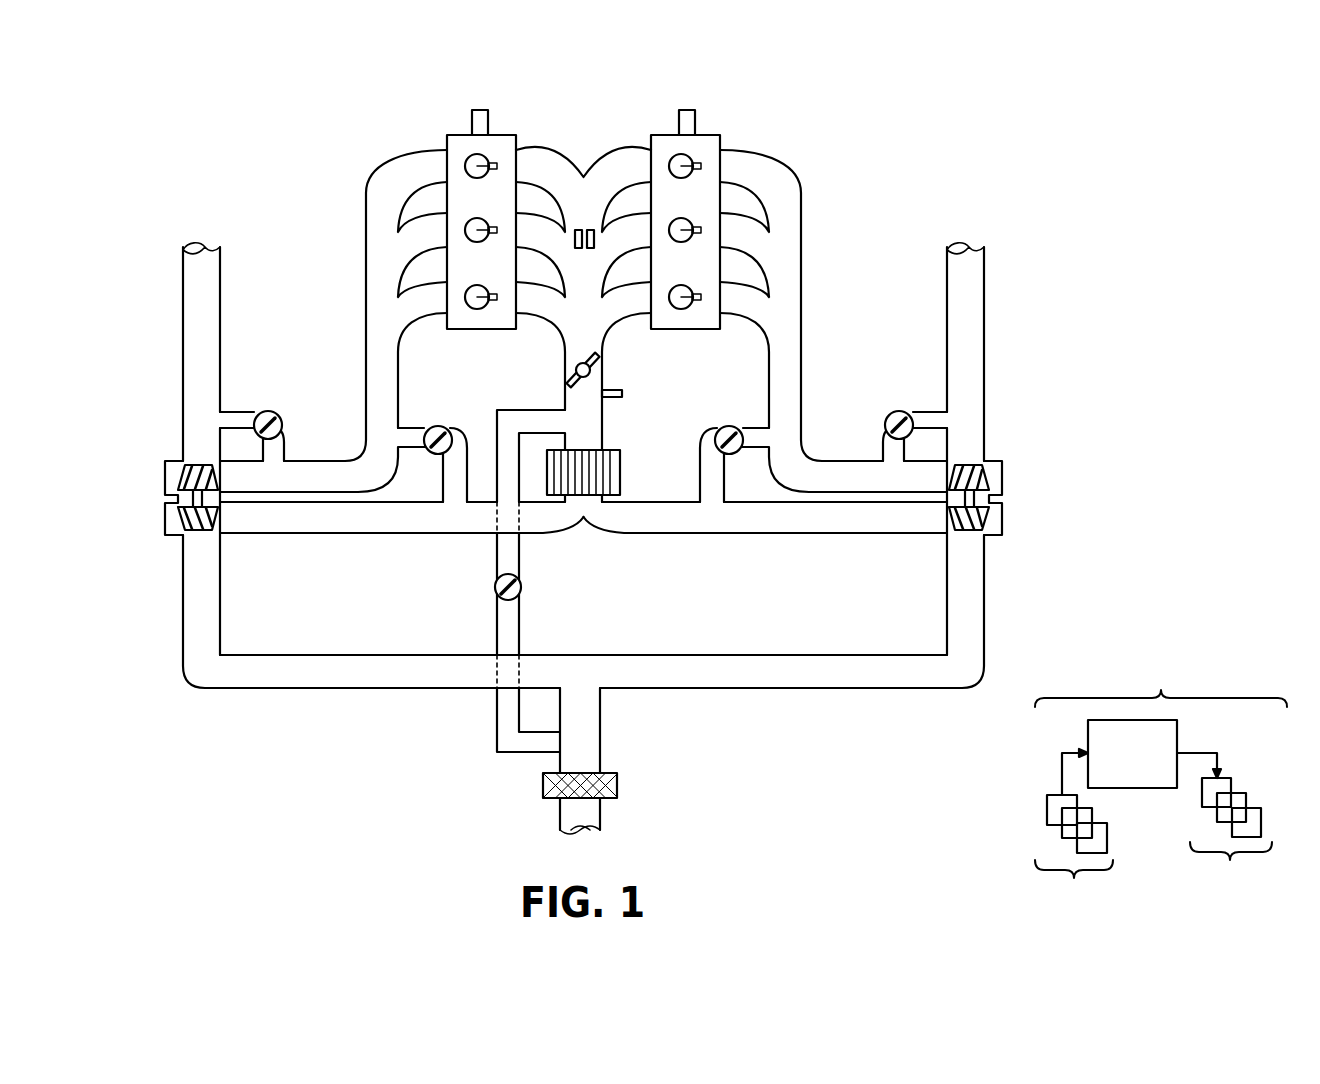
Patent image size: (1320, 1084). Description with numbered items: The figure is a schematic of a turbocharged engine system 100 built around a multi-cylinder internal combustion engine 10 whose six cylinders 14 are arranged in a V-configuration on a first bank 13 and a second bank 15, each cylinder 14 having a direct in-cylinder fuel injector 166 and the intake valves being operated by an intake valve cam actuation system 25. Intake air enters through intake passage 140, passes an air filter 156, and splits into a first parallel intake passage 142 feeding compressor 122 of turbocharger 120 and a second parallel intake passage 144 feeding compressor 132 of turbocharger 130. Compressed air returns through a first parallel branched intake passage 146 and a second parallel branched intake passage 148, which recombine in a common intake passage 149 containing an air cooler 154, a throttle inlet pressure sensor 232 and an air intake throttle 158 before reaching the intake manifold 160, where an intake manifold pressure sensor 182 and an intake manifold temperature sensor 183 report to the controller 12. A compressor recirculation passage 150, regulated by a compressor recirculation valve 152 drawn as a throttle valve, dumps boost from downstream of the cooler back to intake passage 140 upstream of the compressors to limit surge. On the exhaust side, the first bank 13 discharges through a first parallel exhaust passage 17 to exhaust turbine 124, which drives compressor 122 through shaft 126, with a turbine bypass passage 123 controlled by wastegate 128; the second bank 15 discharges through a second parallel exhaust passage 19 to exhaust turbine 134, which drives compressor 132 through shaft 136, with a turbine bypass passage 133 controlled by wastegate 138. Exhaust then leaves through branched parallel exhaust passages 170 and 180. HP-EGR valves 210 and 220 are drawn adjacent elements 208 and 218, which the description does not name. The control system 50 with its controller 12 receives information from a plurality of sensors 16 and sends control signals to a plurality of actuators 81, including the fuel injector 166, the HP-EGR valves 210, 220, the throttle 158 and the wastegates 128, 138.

The internal combustion engine 10 is at (948, 135).
The turbocharged engine system 100 is at (1204, 135).
The intake manifold 160 is at (579, 152).
The second parallel exhaust passage 19 is at (365, 384).
The first parallel exhaust passage 17 is at (802, 391).
The second bank 15 is at (458, 134).
The first bank 13 is at (709, 134).
The intake valve cam actuation system 25 is at (482, 110).
The cylinder 14 is at (683, 214).
The fuel injector 166 is at (699, 227).
The intake manifold pressure sensor 182 is at (577, 249).
The intake manifold temperature sensor 183 is at (591, 249).
The common intake passage 149 is at (604, 423).
The air intake throttle 158 is at (583, 362).
The throttle inlet pressure sensor 232 is at (619, 390).
The air cooler 154 is at (620, 462).
The first exhaust passage 218 is at (404, 427).
The HP-EGR valve 220 is at (440, 426).
The second exhaust passage 208 is at (704, 458).
The HP-EGR valve 210 is at (729, 426).
The compressor recirculation passage 150 is at (497, 563).
The compressor recirculation valve 152 is at (522, 582).
The second parallel branched intake passage 148 is at (321, 534).
The first parallel branched intake passage 146 is at (757, 534).
The second parallel intake passage 144 is at (349, 655).
The first parallel intake passage 142 is at (762, 655).
The branched parallel exhaust passage 180 is at (223, 291).
The turbine bypass passage 133 is at (237, 411).
The wastegate 138 is at (280, 419).
The branched parallel exhaust passage 170 is at (946, 292).
The turbine bypass passage 123 is at (935, 412).
The wastegate 128 is at (887, 418).
The turbocharger 130 is at (164, 474).
The exhaust turbine 134 is at (183, 471).
The shaft 136 is at (183, 508).
The compressor 132 is at (204, 533).
The turbocharger 120 is at (995, 473).
The exhaust turbine 124 is at (974, 464).
The shaft 126 is at (974, 498).
The compressor 122 is at (960, 530).
The intake passage 140 is at (560, 817).
The air filter 156 is at (617, 781).
The control system 50 is at (1161, 782).
The controller 12 is at (1132, 754).
The sensors 16 is at (1074, 832).
The actuators 81 is at (1224, 826).